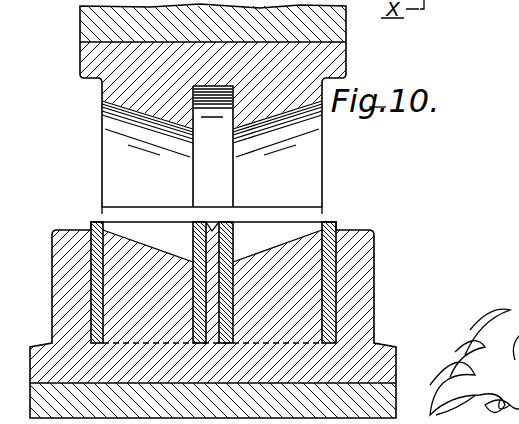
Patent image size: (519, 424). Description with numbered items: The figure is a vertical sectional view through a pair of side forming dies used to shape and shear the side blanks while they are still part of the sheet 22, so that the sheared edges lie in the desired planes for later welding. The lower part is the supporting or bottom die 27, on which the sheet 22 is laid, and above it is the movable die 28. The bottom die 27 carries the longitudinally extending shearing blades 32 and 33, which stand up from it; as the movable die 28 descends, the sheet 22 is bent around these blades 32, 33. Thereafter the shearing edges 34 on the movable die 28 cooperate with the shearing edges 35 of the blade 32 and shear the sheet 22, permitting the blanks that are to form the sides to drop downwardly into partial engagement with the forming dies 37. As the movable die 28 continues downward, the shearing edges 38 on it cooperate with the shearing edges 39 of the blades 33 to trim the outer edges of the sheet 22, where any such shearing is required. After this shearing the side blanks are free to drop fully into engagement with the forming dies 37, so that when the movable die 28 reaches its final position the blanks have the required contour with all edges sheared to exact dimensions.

The sheet 22 is at (263, 217).
The supporting or bottom die 27 is at (357, 295).
The movable die 28 is at (100, 57).
The longitudinally extending shearing blade 32 is at (192, 240).
The longitudinally extending shearing blade 33 is at (97, 258).
The shearing edges 34 is at (233, 128).
The shearing edges 35 is at (228, 217).
The forming dies 37 is at (142, 238).
The shearing edges 38 is at (102, 101).
The shearing edges 39 is at (113, 222).